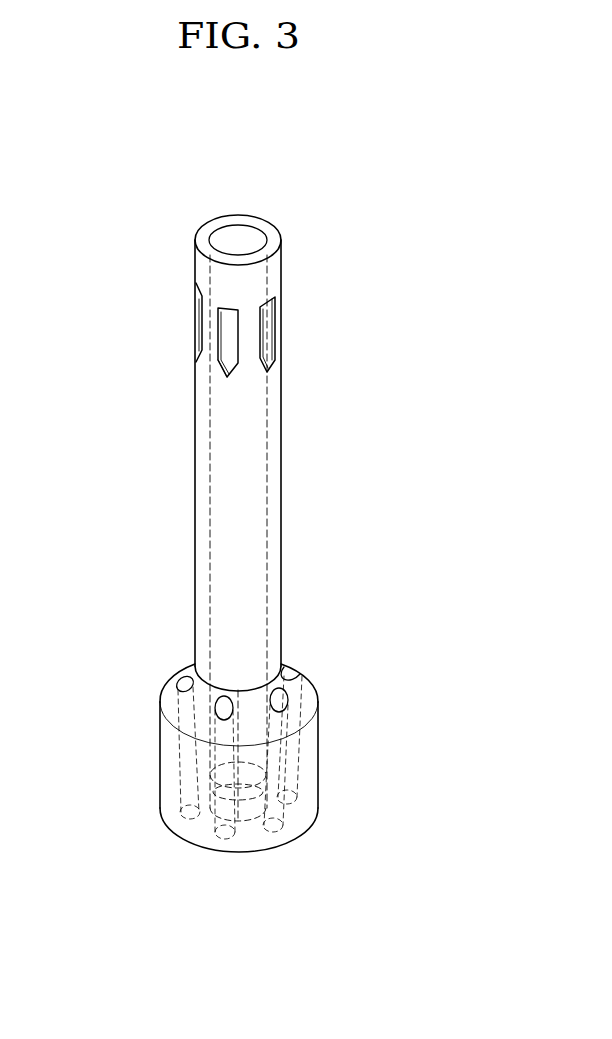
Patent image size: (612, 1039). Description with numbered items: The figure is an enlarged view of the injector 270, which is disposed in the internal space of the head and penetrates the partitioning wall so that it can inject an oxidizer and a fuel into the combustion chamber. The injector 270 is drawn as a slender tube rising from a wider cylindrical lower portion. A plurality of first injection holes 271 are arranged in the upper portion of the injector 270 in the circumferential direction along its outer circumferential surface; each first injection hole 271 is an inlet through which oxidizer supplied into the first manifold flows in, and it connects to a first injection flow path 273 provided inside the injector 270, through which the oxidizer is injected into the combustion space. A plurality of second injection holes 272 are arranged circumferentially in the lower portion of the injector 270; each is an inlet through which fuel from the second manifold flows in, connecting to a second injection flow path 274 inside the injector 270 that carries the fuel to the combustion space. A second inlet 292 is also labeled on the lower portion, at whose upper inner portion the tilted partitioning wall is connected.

The injector 270 is at (388, 183).
The first injection hole 271 is at (228, 341).
The second injection hole 272 is at (222, 710).
The first injection flow path 273 is at (233, 500).
The second injection flow path 274 is at (194, 779).
The second inlet 292 is at (281, 701).